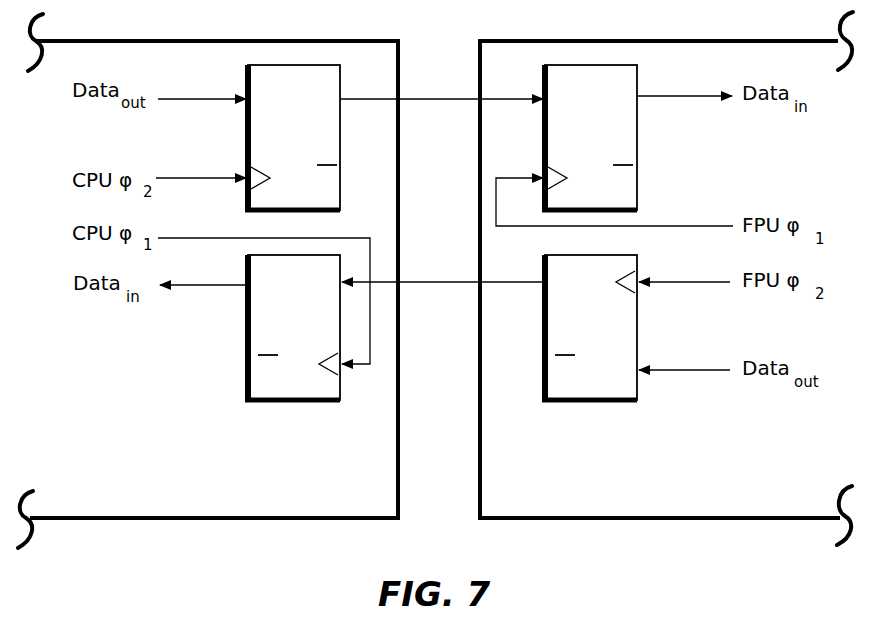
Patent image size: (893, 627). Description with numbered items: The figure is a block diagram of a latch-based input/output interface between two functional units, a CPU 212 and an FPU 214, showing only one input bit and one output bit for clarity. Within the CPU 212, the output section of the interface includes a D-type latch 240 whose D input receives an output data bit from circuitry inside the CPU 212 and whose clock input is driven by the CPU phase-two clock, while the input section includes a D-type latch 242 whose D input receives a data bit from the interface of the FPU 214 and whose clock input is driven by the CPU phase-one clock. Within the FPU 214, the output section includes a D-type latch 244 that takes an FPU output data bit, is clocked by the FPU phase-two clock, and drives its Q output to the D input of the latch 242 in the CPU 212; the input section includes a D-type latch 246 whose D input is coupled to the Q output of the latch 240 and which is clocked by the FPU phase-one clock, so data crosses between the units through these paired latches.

The CPU 212 is at (208, 281).
The FPU 214 is at (666, 278).
The D-type latch 240 is at (247, 137).
The D-type latch 242 is at (247, 332).
The D-type latch 244 is at (638, 327).
The D-type latch 246 is at (638, 137).